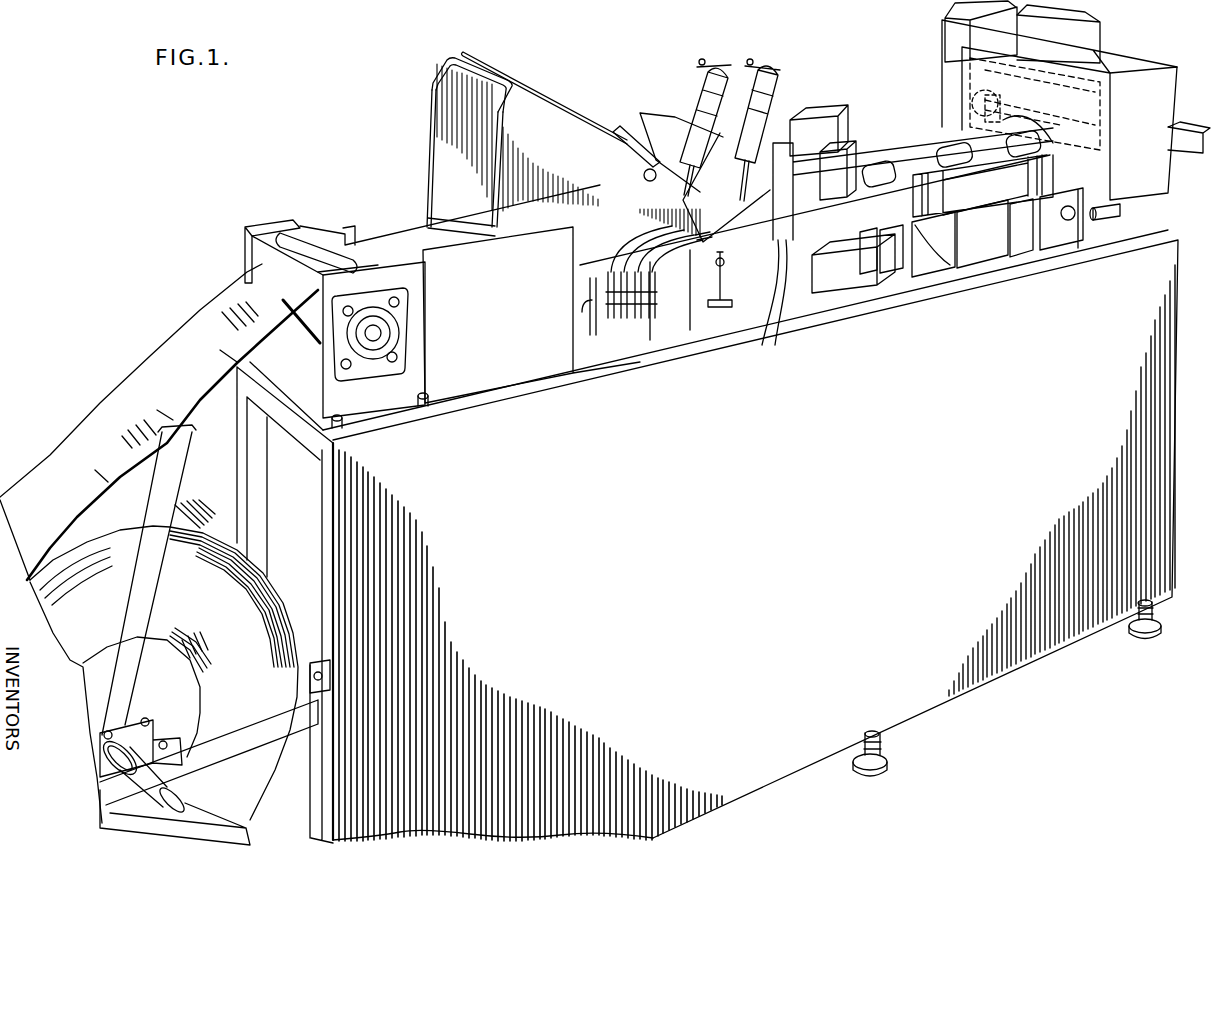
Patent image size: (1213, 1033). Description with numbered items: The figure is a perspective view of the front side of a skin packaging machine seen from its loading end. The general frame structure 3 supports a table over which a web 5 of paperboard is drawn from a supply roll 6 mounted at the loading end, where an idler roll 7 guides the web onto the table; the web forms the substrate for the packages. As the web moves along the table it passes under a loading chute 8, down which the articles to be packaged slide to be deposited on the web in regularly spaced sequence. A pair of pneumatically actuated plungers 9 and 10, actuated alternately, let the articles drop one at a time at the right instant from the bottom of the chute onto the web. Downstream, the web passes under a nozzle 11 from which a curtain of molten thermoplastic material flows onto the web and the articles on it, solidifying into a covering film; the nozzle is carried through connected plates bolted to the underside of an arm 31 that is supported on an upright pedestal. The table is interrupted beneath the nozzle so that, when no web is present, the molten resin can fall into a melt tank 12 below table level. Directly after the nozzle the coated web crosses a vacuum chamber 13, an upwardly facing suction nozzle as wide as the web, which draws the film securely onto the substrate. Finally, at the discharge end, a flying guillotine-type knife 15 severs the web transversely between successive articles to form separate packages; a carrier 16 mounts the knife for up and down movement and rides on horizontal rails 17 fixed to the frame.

The frame structure 3 is at (672, 355).
The web 5 is at (397, 250).
The supply roll 6 is at (194, 607).
The idler roll 7 is at (305, 337).
The loading chute 8 is at (558, 137).
The pneumatically actuated plunger 9 is at (703, 104).
The pneumatically actuated plunger 10 is at (773, 95).
The nozzle 11 is at (840, 150).
The melt tank 12 is at (797, 250).
The vacuum chamber 13 is at (967, 193).
The flying guillotine-type knife 15 is at (1110, 98).
The carrier 16 is at (1154, 146).
The horizontal rails 17 is at (1093, 215).
The arm 31 is at (813, 112).